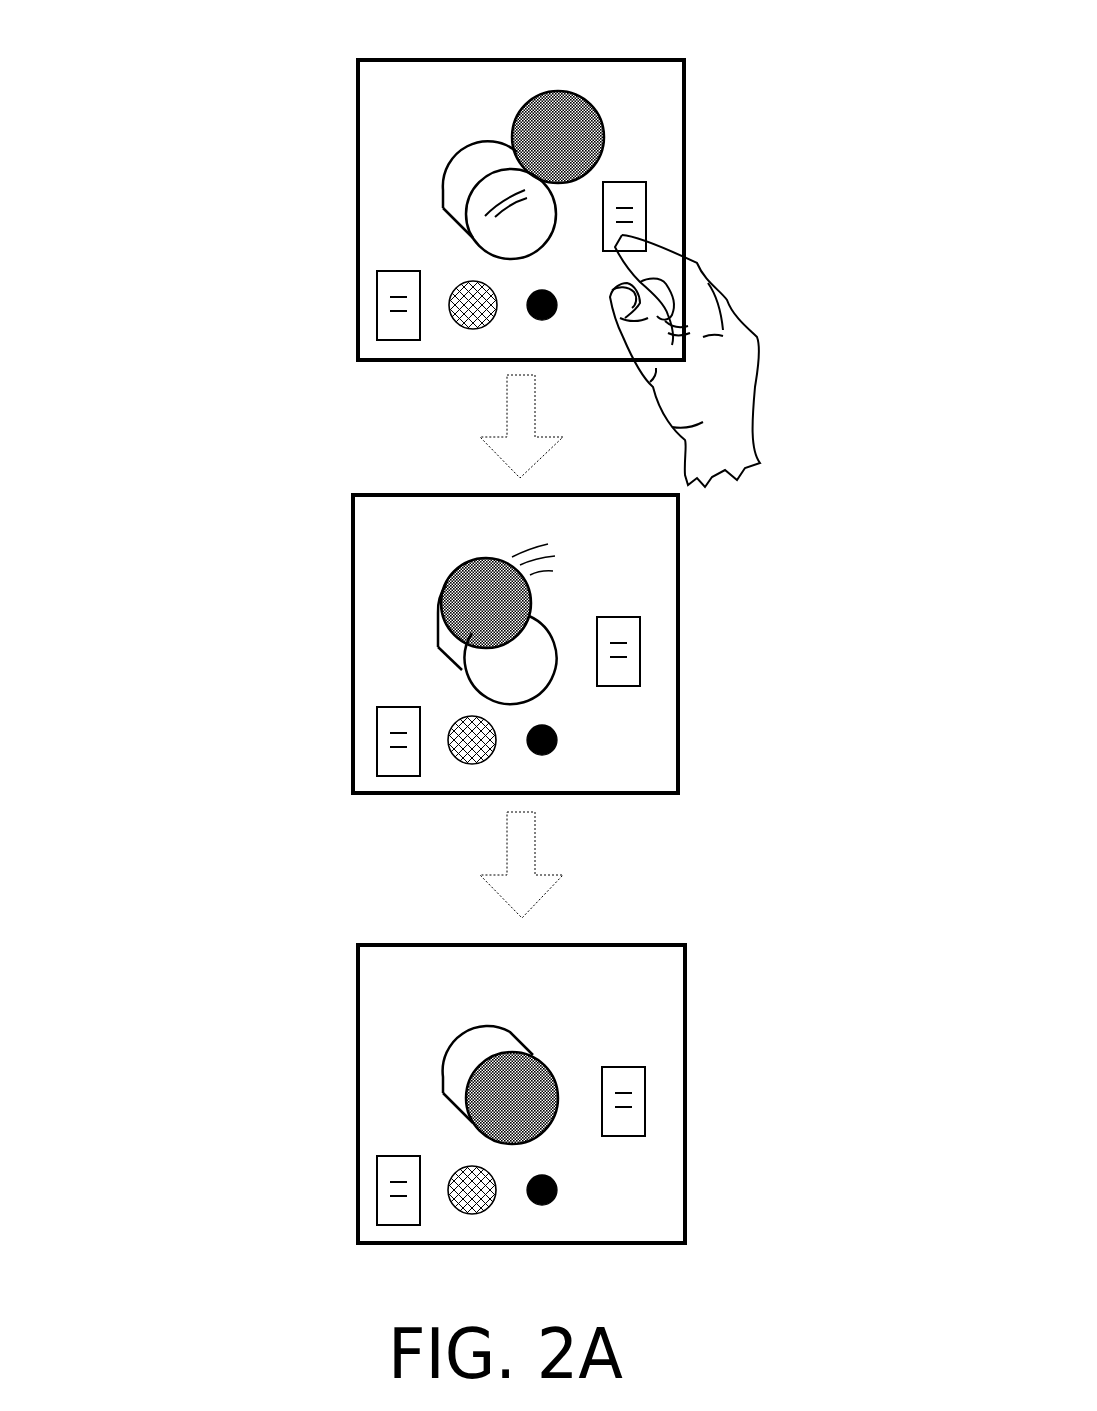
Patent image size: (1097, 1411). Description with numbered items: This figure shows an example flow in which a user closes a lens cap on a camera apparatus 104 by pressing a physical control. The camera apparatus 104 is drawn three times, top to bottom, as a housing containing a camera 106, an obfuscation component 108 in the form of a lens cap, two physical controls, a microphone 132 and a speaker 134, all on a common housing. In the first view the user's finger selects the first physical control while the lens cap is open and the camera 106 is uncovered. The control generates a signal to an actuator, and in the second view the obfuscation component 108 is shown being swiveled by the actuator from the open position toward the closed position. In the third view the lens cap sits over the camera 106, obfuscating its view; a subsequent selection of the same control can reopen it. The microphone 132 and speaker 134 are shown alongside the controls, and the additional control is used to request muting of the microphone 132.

The camera apparatus 104 is at (680, 33).
The camera 106 is at (445, 168).
The obfuscation component 108 is at (593, 108).
The microphone 132 is at (528, 322).
The speaker 134 is at (450, 328).